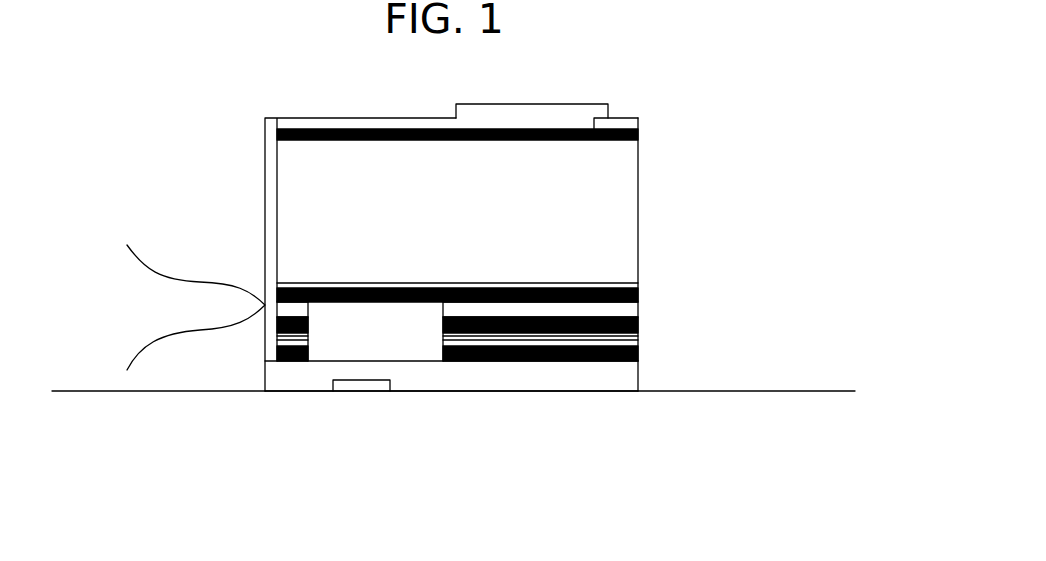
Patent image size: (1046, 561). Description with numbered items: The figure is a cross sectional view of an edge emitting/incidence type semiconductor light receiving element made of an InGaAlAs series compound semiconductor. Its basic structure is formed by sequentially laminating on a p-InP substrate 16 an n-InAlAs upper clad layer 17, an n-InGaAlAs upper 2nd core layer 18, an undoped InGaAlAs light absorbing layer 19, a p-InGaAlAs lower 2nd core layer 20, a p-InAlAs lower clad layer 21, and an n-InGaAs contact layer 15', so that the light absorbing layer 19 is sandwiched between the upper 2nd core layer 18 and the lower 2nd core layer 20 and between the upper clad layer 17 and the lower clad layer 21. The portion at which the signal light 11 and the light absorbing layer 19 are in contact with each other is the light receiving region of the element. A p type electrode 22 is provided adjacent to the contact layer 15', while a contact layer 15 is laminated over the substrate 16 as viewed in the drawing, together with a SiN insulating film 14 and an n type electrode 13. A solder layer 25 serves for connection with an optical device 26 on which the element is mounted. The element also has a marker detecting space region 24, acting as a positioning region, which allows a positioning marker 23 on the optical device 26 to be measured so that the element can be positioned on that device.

The signal light 11 is at (169, 280).
The n type electrode 13 is at (573, 108).
The SiN insulating film 14 is at (625, 118).
The contact layer 15 is at (492, 133).
The p-InP substrate 16 is at (627, 173).
The upper clad layer 17 is at (623, 283).
The upper 2nd core layer 18 is at (640, 298).
The light absorbing layer 19 is at (640, 311).
The lower 2nd core layer 20 is at (640, 322).
The lower clad layer 21 is at (640, 333).
The n-InGaAs contact layer 15' is at (512, 364).
The p type electrode 22 is at (620, 362).
The positioning marker 23 is at (336, 385).
The marker detecting space region 24 is at (338, 322).
The solder layer 25 is at (550, 377).
The optical device 26 is at (100, 410).